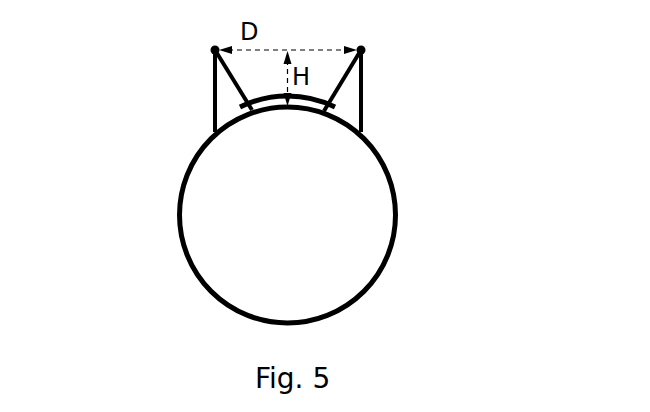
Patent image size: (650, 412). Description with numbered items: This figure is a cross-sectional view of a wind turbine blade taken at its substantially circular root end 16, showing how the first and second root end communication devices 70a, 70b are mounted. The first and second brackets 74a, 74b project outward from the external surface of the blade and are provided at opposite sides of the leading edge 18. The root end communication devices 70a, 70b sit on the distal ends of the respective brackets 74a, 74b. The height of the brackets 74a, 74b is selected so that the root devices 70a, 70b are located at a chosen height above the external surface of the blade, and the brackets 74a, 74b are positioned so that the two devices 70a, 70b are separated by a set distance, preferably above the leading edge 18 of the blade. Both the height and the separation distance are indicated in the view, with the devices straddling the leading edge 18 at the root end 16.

The root end 16 is at (396, 195).
The leading edge 18 is at (294, 108).
The first root end communication device 70a is at (212, 50).
The second root end communication device 70b is at (364, 50).
The first bracket 74a is at (214, 103).
The second bracket 74b is at (362, 102).